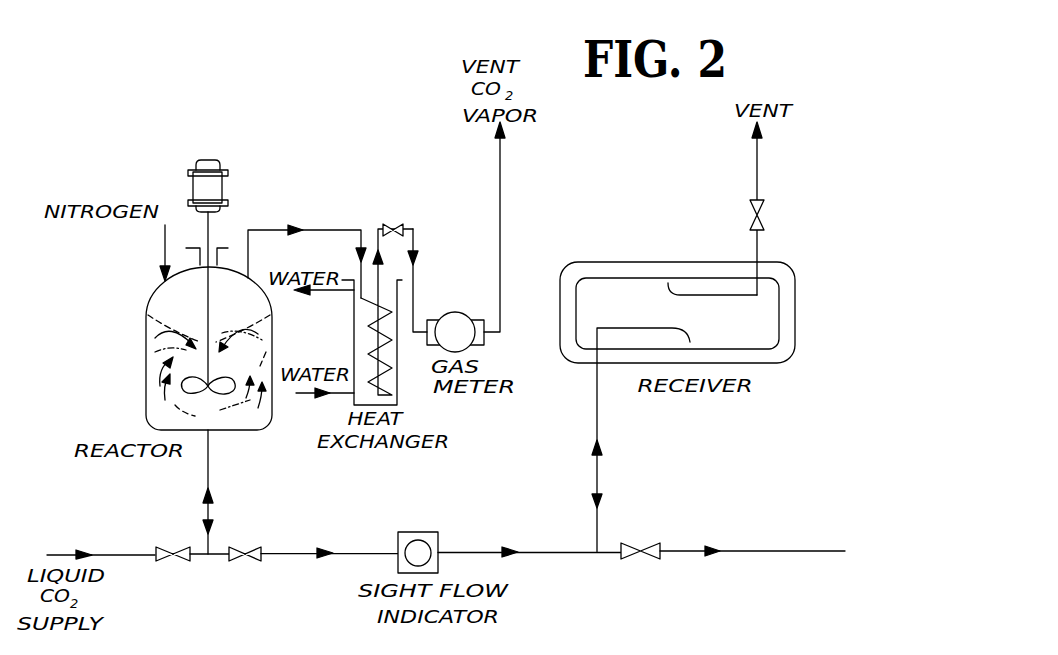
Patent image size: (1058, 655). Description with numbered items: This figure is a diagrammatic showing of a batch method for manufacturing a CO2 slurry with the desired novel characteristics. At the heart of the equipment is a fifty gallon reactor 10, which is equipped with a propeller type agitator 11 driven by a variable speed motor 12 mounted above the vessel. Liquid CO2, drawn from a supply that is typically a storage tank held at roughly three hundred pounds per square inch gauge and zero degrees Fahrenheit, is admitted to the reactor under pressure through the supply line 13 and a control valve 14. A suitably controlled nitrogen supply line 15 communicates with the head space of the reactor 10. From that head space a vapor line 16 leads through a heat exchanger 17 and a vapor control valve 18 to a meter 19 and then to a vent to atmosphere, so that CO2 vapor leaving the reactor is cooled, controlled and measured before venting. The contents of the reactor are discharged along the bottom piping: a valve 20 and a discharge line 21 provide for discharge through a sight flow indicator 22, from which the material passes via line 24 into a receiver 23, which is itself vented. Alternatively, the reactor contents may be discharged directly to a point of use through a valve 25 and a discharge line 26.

The reactor 10 is at (146, 326).
The propeller type agitator 11 is at (185, 386).
The variable speed motor 12 is at (222, 195).
The supply line 13 is at (110, 555).
The control valve 14 is at (172, 562).
The nitrogen supply line 15 is at (165, 238).
The vapor line 16 is at (326, 230).
The heat exchanger 17 is at (354, 326).
The vapor control valve 18 is at (394, 223).
The meter 19 is at (455, 312).
The valve 20 is at (245, 562).
The discharge line 21 is at (352, 553).
The sight flow indicator 22 is at (412, 532).
The receiver 23 is at (772, 316).
The line 24 is at (600, 474).
The valve 25 is at (640, 560).
The discharge line 26 is at (736, 552).